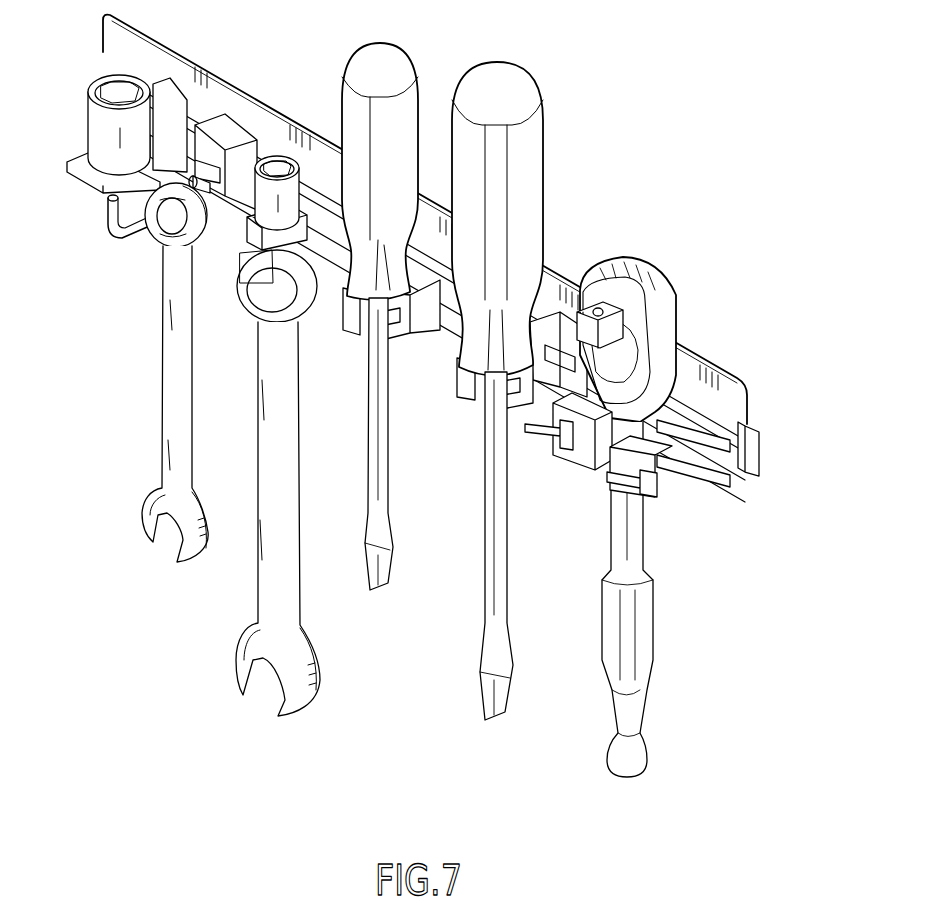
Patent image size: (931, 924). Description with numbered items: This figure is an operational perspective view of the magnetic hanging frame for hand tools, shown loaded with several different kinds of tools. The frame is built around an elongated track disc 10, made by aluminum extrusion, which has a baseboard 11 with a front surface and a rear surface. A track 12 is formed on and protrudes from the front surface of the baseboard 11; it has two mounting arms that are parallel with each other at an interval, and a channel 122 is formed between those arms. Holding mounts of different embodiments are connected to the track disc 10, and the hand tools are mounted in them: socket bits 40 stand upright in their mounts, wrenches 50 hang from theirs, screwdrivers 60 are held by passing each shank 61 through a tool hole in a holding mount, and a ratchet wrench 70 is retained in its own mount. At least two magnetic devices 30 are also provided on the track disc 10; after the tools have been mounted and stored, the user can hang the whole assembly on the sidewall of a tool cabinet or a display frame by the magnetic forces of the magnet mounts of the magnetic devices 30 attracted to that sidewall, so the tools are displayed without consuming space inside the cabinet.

The track disc 10 is at (461, 287).
The baseboard 11 is at (730, 393).
The track 12 is at (723, 489).
The channel 122 is at (750, 460).
The magnetic device 30 is at (760, 438).
The socket bit 40 is at (136, 81).
The wrench 50 is at (154, 366).
The screwdriver 60 is at (422, 54).
The shank 61 is at (380, 440).
The ratchet wrench 70 is at (672, 279).